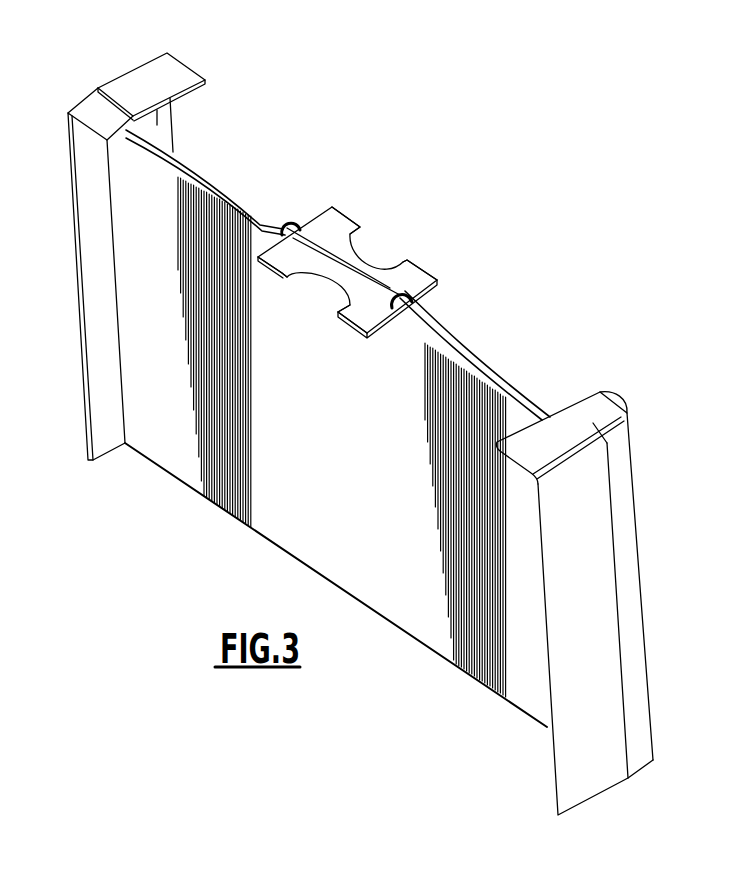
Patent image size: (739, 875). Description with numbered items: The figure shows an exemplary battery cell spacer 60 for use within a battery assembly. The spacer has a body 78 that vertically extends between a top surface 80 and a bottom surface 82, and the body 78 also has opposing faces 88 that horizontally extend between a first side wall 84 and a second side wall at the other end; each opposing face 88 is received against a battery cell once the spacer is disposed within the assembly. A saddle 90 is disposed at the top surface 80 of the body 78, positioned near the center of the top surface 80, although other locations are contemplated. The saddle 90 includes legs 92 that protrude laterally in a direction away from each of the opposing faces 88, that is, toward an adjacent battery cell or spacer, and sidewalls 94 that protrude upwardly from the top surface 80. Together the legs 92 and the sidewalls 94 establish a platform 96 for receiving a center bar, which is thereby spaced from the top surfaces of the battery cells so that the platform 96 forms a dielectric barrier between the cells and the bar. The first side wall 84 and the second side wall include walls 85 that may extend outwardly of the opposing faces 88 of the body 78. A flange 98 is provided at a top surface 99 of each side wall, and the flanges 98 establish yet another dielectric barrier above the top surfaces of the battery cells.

The battery cell spacer 60 is at (438, 190).
The body 78 is at (232, 540).
The top surface 80 is at (515, 392).
The bottom surface 82 is at (413, 638).
The first side wall 84 is at (105, 343).
The walls 85 is at (165, 140).
The opposing faces 88 is at (212, 178).
The saddle 90 is at (320, 198).
The legs 92 is at (338, 223).
The sidewalls 94 is at (289, 221).
The platform 96 is at (344, 270).
The flange 98 is at (100, 60).
The top surface 99 is at (140, 90).